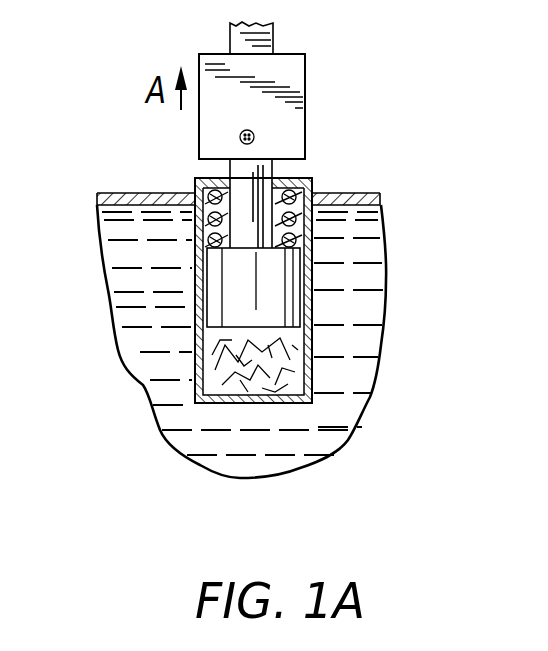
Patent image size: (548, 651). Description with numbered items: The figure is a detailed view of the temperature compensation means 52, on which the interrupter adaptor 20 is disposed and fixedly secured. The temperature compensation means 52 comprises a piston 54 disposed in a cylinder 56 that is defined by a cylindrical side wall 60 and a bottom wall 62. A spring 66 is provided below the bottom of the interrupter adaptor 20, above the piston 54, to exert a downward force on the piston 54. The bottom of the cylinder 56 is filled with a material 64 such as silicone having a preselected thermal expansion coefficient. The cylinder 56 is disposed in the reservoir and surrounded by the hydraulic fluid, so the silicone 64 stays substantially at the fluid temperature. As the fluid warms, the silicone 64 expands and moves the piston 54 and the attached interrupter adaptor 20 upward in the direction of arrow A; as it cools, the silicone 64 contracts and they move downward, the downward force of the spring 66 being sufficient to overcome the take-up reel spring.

The interrupter adaptor 20 is at (293, 88).
The temperature compensation means 52 is at (291, 278).
The piston 54 is at (197, 302).
The cylinder 56 is at (195, 190).
The cylindrical side wall 60 is at (318, 370).
The bottom wall 62 is at (262, 405).
The material (silicone) 64 is at (237, 367).
The spring 66 is at (203, 221).